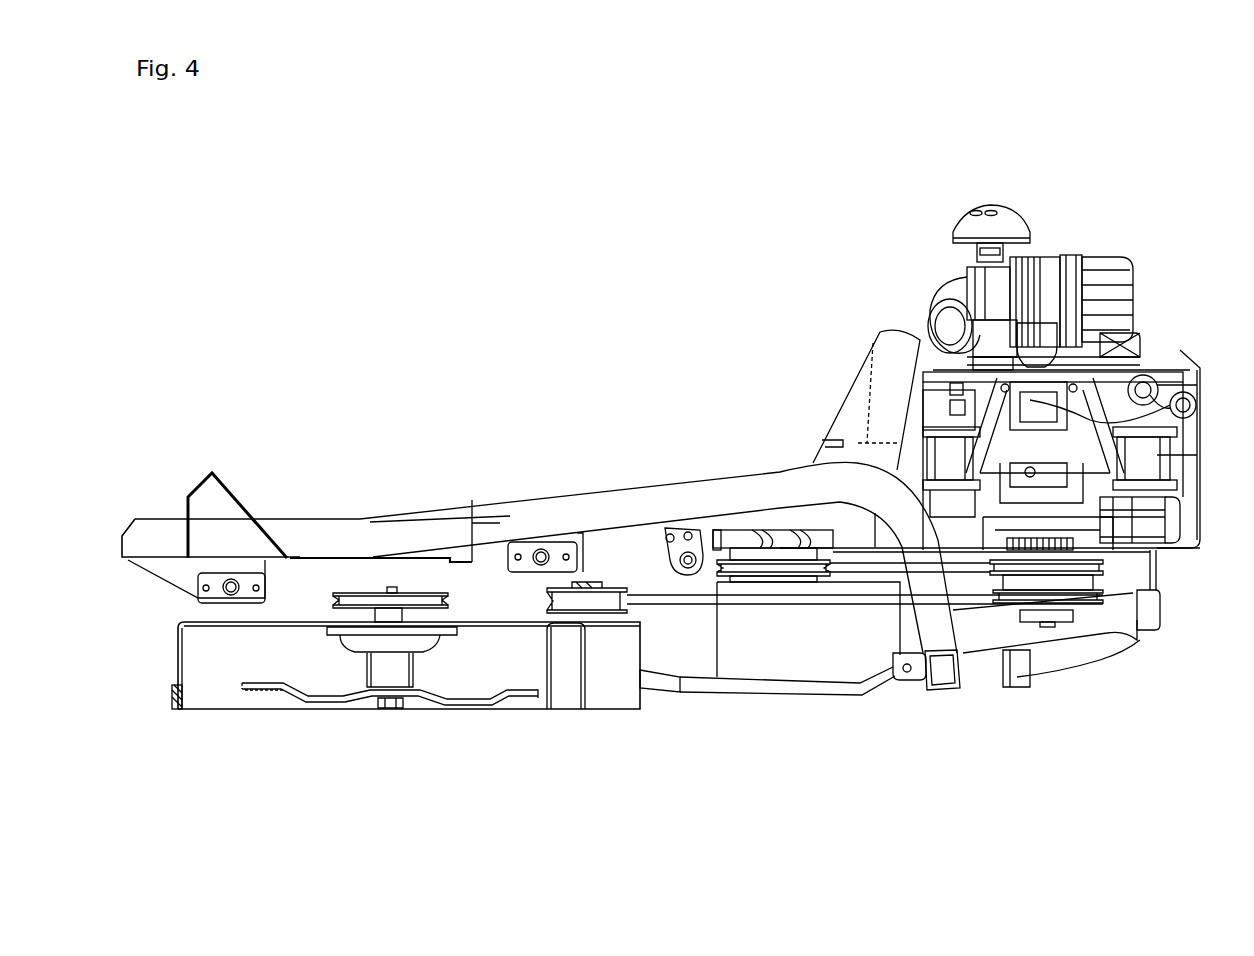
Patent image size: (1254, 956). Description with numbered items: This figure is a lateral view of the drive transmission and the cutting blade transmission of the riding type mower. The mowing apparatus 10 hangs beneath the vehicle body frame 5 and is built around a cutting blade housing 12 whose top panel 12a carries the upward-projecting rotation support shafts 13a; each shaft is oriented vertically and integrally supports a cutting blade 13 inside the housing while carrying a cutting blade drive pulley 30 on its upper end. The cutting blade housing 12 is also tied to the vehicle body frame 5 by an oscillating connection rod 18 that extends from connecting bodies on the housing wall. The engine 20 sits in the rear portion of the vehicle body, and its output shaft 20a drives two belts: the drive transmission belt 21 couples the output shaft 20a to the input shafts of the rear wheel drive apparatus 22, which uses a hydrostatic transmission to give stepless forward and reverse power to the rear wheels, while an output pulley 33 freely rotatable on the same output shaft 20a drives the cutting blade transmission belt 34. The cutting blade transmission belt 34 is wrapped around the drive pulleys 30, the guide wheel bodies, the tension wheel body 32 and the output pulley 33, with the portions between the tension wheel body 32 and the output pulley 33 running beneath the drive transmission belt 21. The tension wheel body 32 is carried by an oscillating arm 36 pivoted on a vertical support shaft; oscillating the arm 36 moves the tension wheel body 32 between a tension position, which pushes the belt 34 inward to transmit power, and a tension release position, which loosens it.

The vehicle body frame 5 is at (595, 492).
The mowing apparatus 10 is at (380, 730).
The cutting blade housing 12 is at (177, 663).
The top panel 12a is at (198, 620).
The cutting blade 13 is at (320, 702).
The rotation support shaft 13a is at (397, 588).
The oscillating connection rod 18 is at (743, 700).
The engine 20 is at (1142, 374).
The output shaft 20a is at (1045, 626).
The drive transmission belt 21 is at (925, 570).
The rear wheel drive apparatus 22 is at (820, 678).
The cutting blade drive pulley 30 is at (357, 593).
The tension wheel body 32 is at (617, 584).
The output pulley 33 is at (1097, 607).
The cutting blade transmission belt 34 is at (816, 605).
The oscillating arm 36 is at (600, 584).